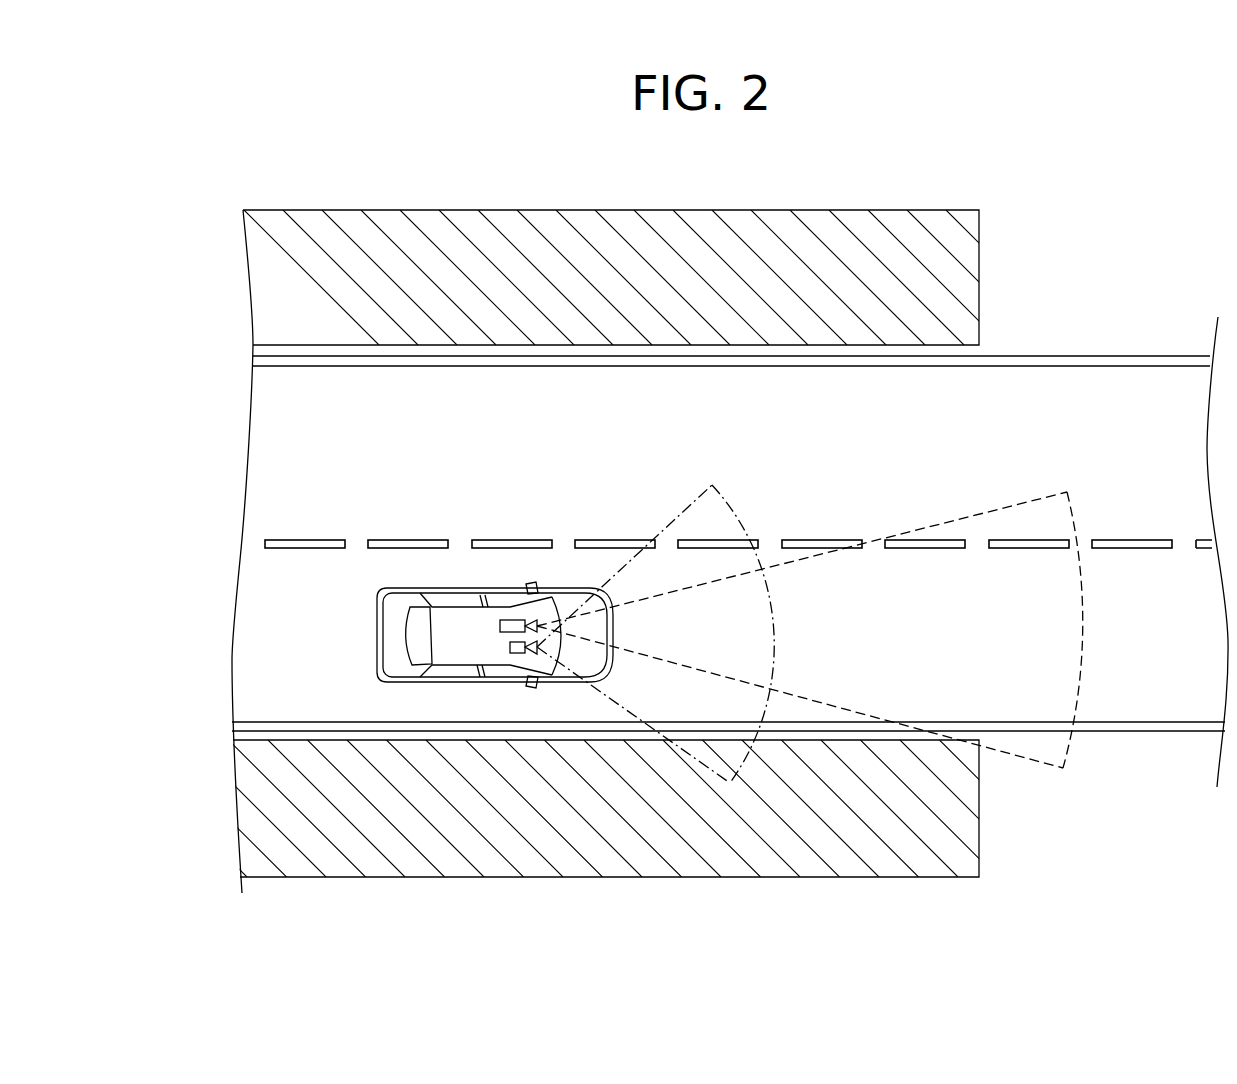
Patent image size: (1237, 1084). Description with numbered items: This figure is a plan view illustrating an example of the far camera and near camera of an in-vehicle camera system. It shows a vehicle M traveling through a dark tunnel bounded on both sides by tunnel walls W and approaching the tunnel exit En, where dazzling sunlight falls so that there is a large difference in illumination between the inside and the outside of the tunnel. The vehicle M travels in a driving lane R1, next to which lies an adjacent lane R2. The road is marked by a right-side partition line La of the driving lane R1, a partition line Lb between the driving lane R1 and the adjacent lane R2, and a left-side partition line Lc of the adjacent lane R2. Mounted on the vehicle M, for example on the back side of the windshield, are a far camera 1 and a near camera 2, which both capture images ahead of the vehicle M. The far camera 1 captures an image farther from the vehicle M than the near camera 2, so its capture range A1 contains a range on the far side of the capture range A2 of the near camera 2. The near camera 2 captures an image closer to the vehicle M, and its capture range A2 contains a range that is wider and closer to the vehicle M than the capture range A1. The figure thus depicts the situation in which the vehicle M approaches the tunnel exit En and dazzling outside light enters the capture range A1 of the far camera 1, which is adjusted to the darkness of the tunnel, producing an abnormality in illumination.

The tunnel wall W is at (574, 257).
The tunnel exit En is at (1011, 407).
The left-side partition line Lc is at (275, 362).
The adjacent lane R2 is at (275, 452).
The partition line Lb is at (265, 545).
The driving lane R1 is at (250, 632).
The right-side partition line La is at (250, 727).
The vehicle M is at (457, 622).
The far camera 1 is at (503, 617).
The near camera 2 is at (518, 655).
The capture range of near camera A2 is at (690, 501).
The capture range of far camera A1 is at (990, 512).